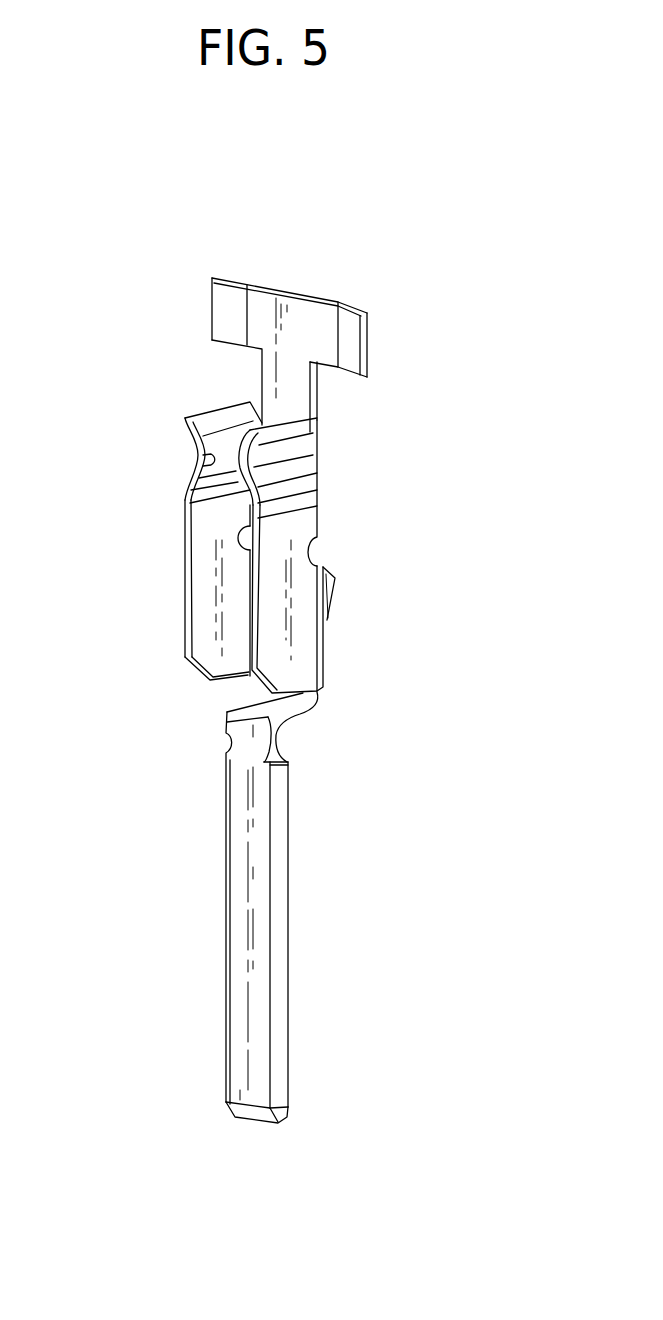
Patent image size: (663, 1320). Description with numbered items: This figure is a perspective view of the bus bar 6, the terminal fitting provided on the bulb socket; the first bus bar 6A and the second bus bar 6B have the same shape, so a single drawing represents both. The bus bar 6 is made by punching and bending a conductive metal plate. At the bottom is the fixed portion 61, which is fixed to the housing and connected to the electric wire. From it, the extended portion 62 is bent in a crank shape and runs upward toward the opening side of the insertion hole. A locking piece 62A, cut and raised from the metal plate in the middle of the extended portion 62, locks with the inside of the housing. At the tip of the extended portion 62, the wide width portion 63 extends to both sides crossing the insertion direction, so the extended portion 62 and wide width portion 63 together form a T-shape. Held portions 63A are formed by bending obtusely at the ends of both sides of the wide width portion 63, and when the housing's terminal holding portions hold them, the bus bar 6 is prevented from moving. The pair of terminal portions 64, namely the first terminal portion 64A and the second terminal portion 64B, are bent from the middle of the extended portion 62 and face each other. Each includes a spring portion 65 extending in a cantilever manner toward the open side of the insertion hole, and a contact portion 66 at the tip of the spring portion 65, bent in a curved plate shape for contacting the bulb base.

The bus bar 6 is at (187, 273).
The first bus bar 6A is at (250, 678).
The second bus bar 6B is at (250, 678).
The fixed portion 61 is at (290, 884).
The extended portion 62 is at (318, 441).
The locking piece 62A is at (331, 597).
The wide width portion 63 is at (333, 300).
The held portions 63A is at (212, 315).
The pair of terminal portions 64 is at (233, 519).
The first terminal portion 64A is at (185, 530).
The second terminal portion 64B is at (250, 617).
The spring portion 65 is at (250, 572).
The contact portion 66 is at (232, 456).